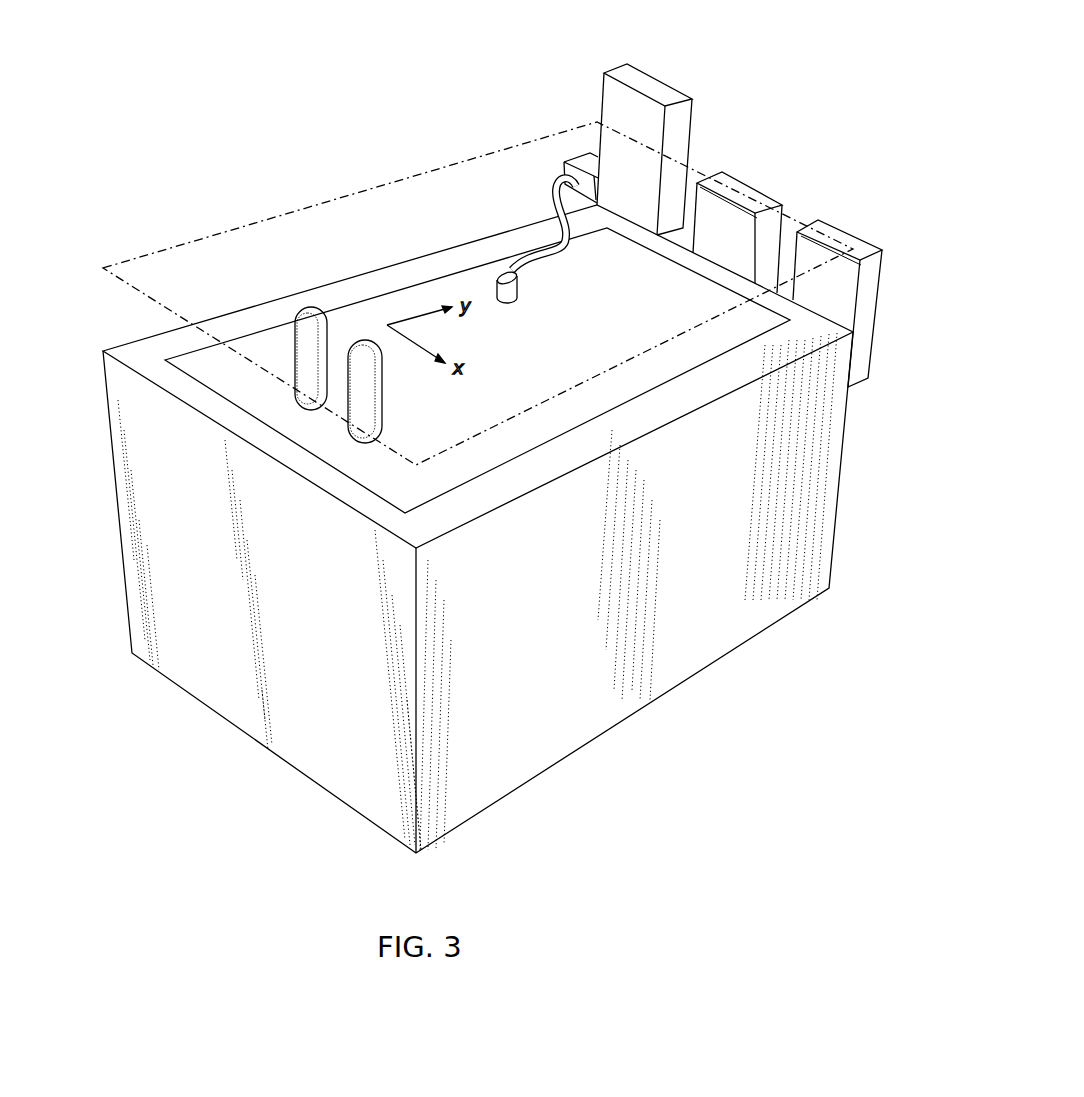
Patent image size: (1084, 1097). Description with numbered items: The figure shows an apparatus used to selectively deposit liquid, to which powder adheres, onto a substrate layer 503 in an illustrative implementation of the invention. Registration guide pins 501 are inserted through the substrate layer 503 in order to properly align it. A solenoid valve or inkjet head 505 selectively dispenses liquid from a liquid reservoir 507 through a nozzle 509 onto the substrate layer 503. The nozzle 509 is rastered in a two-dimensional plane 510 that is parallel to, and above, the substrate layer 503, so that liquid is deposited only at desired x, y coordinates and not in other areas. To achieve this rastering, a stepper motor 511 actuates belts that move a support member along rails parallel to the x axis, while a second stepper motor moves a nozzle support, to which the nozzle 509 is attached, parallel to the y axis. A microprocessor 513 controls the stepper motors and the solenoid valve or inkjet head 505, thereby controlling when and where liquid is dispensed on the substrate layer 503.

The registration guide pins 501 is at (363, 342).
The substrate layer 503 is at (702, 342).
The solenoid valve or inkjet head 505 is at (572, 153).
The liquid reservoir 507 is at (650, 85).
The nozzle 509 is at (513, 290).
The 2D plane 510 is at (132, 259).
The stepper motor 511 is at (867, 250).
The microprocessor 513 is at (770, 202).